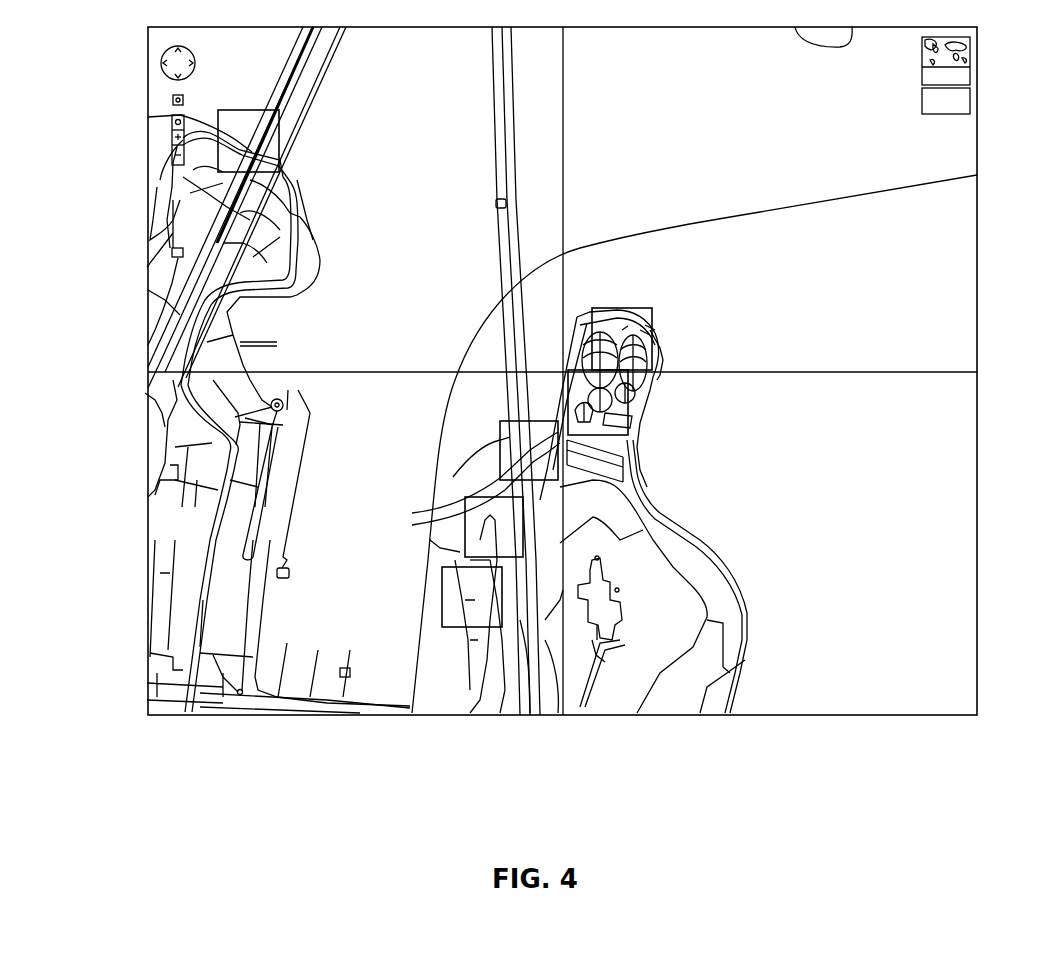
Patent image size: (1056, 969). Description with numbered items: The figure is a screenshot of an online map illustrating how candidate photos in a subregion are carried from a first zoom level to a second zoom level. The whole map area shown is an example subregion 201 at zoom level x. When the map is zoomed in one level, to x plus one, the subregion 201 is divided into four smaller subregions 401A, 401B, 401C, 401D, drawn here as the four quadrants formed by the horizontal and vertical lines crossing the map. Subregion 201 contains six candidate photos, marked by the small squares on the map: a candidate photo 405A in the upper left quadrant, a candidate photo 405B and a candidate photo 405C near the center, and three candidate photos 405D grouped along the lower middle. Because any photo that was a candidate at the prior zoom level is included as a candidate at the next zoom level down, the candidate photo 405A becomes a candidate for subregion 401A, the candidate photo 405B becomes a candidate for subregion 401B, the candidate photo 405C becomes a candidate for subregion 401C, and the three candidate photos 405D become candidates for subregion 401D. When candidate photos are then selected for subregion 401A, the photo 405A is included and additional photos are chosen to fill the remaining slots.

The subregion 201 is at (427, 717).
The subregion 401A is at (148, 192).
The subregion 401B is at (977, 198).
The subregion 401C is at (977, 545).
The subregion 401D is at (148, 605).
The candidate photo 405A is at (280, 163).
The candidate photo 405B is at (653, 320).
The candidate photo 405C is at (630, 407).
The candidate photos 405D is at (465, 556).